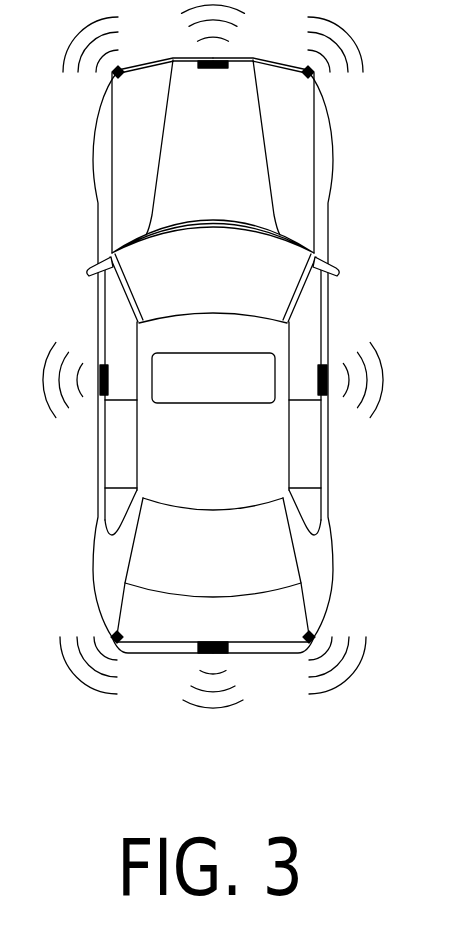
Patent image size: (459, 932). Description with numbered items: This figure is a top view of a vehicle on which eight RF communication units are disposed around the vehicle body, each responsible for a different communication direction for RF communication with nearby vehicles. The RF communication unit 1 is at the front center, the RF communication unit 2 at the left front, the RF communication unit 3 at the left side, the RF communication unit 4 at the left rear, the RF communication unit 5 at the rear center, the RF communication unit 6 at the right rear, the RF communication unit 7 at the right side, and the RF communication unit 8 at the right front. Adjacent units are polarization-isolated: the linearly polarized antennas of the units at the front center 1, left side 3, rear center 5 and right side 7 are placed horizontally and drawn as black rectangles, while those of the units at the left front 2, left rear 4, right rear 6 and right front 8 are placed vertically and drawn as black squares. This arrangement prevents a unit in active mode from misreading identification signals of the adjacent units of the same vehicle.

The RF communication unit 1 is at (213, 71).
The RF communication unit 2 is at (105, 76).
The RF communication unit 3 is at (95, 378).
The RF communication unit 4 is at (110, 638).
The RF communication unit 5 is at (213, 641).
The RF communication unit 6 is at (318, 638).
The RF communication unit 7 is at (332, 377).
The RF communication unit 8 is at (320, 76).